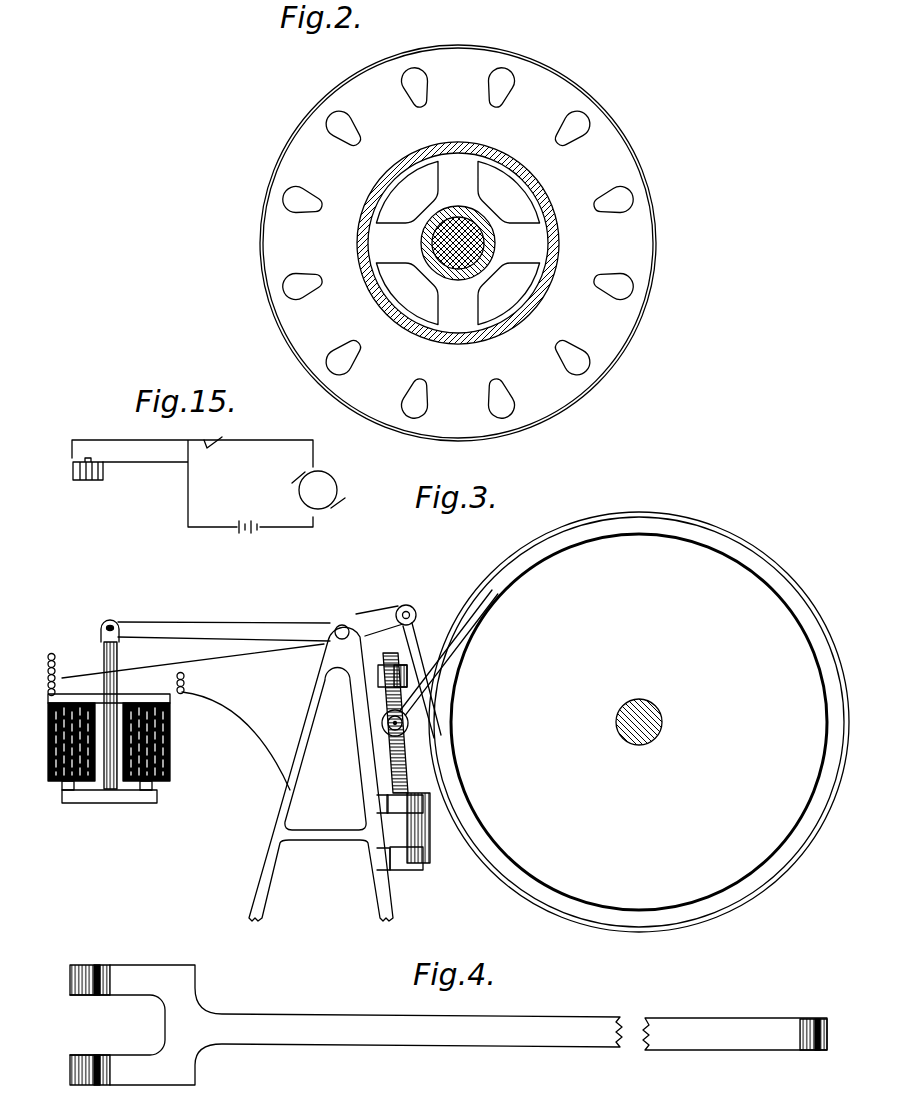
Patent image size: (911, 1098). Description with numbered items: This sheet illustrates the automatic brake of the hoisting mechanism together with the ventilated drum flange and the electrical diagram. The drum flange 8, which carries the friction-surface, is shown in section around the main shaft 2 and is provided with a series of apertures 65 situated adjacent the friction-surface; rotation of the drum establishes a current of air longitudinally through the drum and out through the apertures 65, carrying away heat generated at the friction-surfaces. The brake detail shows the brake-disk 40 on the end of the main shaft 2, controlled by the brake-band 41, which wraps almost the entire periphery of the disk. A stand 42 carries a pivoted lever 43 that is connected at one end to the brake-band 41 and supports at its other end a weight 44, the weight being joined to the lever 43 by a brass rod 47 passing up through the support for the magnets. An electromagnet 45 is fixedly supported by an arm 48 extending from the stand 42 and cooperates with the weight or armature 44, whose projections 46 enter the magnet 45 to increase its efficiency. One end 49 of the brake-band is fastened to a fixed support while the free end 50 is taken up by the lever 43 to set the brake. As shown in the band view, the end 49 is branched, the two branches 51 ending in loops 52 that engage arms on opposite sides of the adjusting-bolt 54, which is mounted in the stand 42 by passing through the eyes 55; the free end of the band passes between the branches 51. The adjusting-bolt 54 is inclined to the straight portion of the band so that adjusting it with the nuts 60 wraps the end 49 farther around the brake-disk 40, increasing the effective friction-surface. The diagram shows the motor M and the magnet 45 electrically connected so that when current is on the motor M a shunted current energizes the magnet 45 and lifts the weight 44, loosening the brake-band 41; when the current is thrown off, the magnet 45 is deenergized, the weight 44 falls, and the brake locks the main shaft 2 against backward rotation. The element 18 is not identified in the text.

In FIG. 2, the flange 8 is at (312, 133).
In FIG. 2, the apertures 65 is at (627, 204).
In FIG. 2, the main shaft 2 is at (483, 238).
In FIG. 3, the main shaft 2 is at (628, 701).
In FIG. 15, the electromagnet 45 is at (86, 487).
In FIG. 3, the electromagnet 45 is at (170, 725).
In FIG. 15, the electric motor M is at (327, 488).
In FIG. 3, the brake-band 41 is at (681, 516).
In FIG. 4, the brake-band 41 is at (470, 1035).
In FIG. 3, the brake-disk 40 is at (610, 892).
In FIG. 3, the lever 43 is at (271, 626).
In FIG. 3, the brass rod 47 is at (118, 677).
In FIG. 3, the spring 18 is at (80, 698).
In FIG. 3, the arm 48 is at (233, 731).
In FIG. 3, the projections 46 is at (154, 788).
In FIG. 3, the weight 44 is at (128, 806).
In FIG. 3, the stand 42 is at (276, 833).
In FIG. 3, the free end of the brake-band 50 is at (413, 623).
In FIG. 4, the free end of the brake-band 50 is at (760, 1005).
In FIG. 3, the end of the brake-band 49 is at (433, 640).
In FIG. 4, the end of the brake-band 49 is at (194, 1000).
In FIG. 3, the adjusting-bolt 54 is at (386, 699).
In FIG. 3, the eyes 55 is at (377, 677).
In FIG. 3, the loops 52 is at (385, 733).
In FIG. 4, the loops 52 is at (87, 965).
In FIG. 3, the nuts 60 is at (433, 798).
In FIG. 4, the branches 51 is at (146, 972).